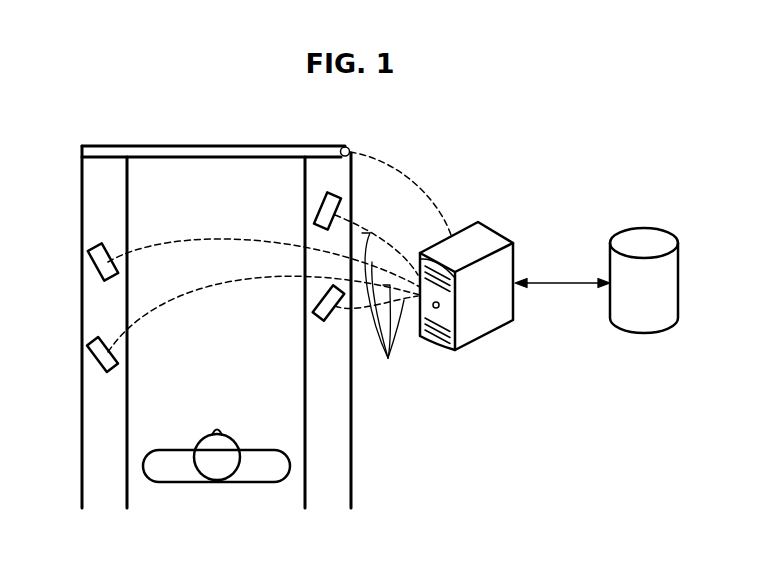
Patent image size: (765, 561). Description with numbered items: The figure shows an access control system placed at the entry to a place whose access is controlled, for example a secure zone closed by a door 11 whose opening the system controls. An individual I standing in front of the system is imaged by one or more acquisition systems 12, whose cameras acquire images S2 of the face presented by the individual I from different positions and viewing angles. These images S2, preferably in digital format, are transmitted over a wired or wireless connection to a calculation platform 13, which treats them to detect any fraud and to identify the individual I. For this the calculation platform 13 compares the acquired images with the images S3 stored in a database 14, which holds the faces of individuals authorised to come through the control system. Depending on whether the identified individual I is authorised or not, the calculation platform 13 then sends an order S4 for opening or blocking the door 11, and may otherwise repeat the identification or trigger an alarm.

The door 11 is at (215, 146).
The acquisition system 12 is at (100, 263).
The calculation platform 13 is at (494, 295).
The database 14 is at (656, 294).
The individual I is at (215, 481).
The images S2 is at (388, 358).
The images S3 is at (560, 282).
The order S4 is at (418, 190).